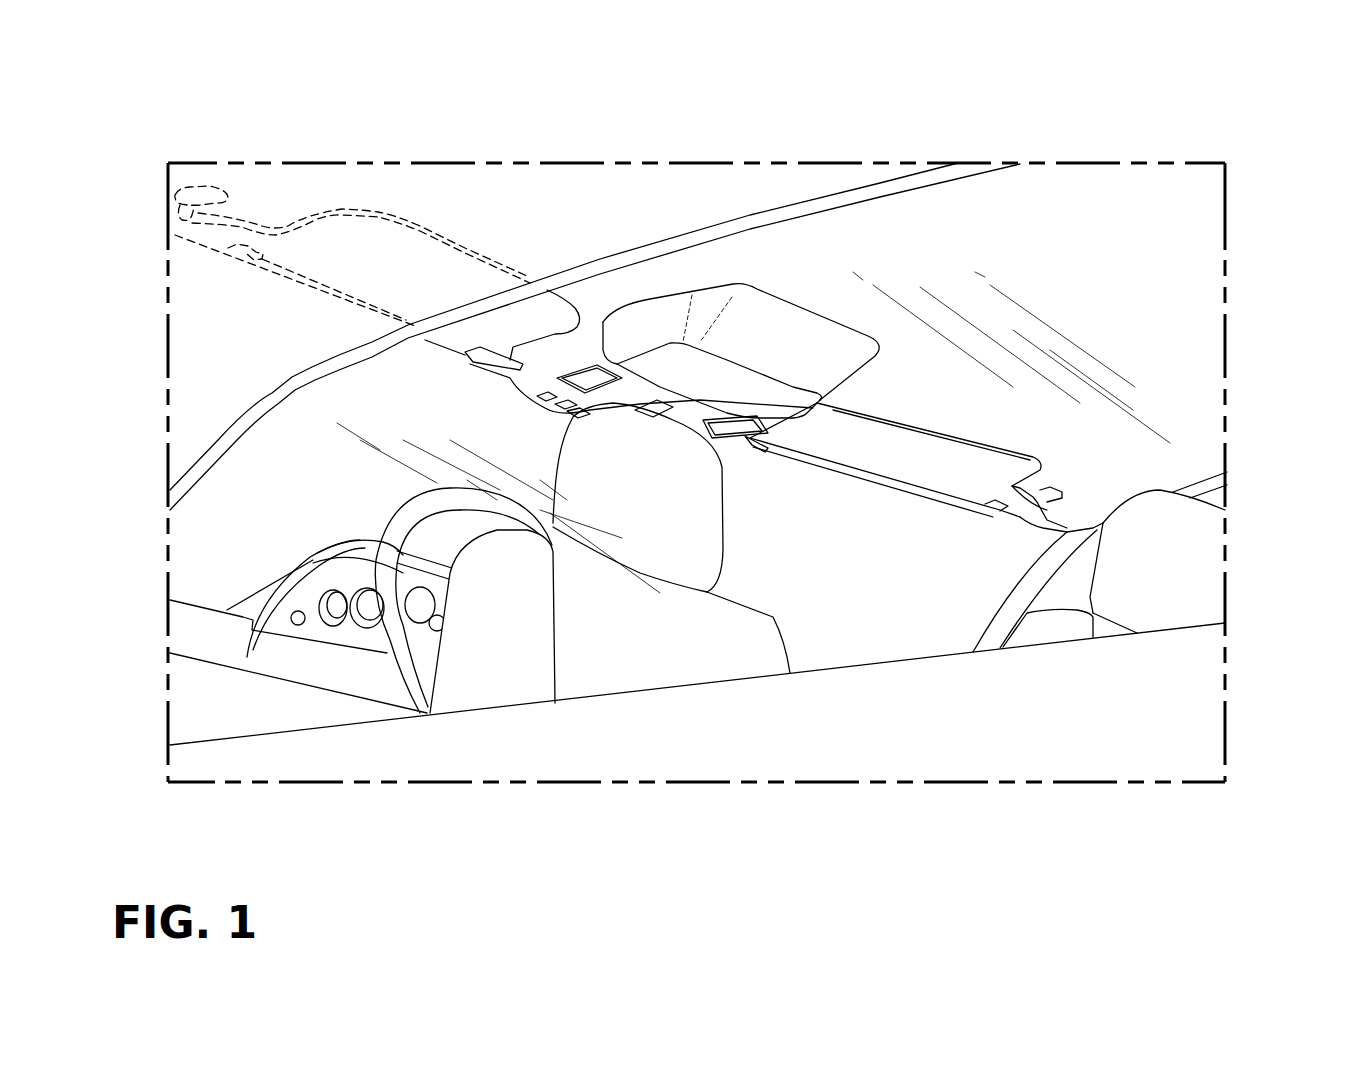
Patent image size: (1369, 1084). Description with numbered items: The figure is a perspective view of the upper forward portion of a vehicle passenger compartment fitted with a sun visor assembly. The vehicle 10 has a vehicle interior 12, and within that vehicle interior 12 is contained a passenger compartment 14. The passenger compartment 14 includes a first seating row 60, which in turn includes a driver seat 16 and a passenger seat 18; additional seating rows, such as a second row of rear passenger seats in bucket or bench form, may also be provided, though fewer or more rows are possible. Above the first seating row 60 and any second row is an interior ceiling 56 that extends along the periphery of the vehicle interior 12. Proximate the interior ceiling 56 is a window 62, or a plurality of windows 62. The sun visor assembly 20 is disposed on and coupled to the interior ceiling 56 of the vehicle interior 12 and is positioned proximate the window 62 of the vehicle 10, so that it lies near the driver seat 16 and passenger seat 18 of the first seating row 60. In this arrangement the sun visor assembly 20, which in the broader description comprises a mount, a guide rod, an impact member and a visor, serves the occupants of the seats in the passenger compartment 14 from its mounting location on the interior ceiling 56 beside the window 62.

The vehicle 10 is at (310, 136).
The vehicle interior 12 is at (400, 157).
The passenger compartment 14 is at (157, 340).
The driver seat 16 is at (492, 688).
The passenger seat 18 is at (1183, 585).
The sun visor assembly 20 is at (480, 246).
The interior ceiling 56 is at (1030, 222).
The first seating row 60 is at (372, 650).
The window 62 is at (307, 425).